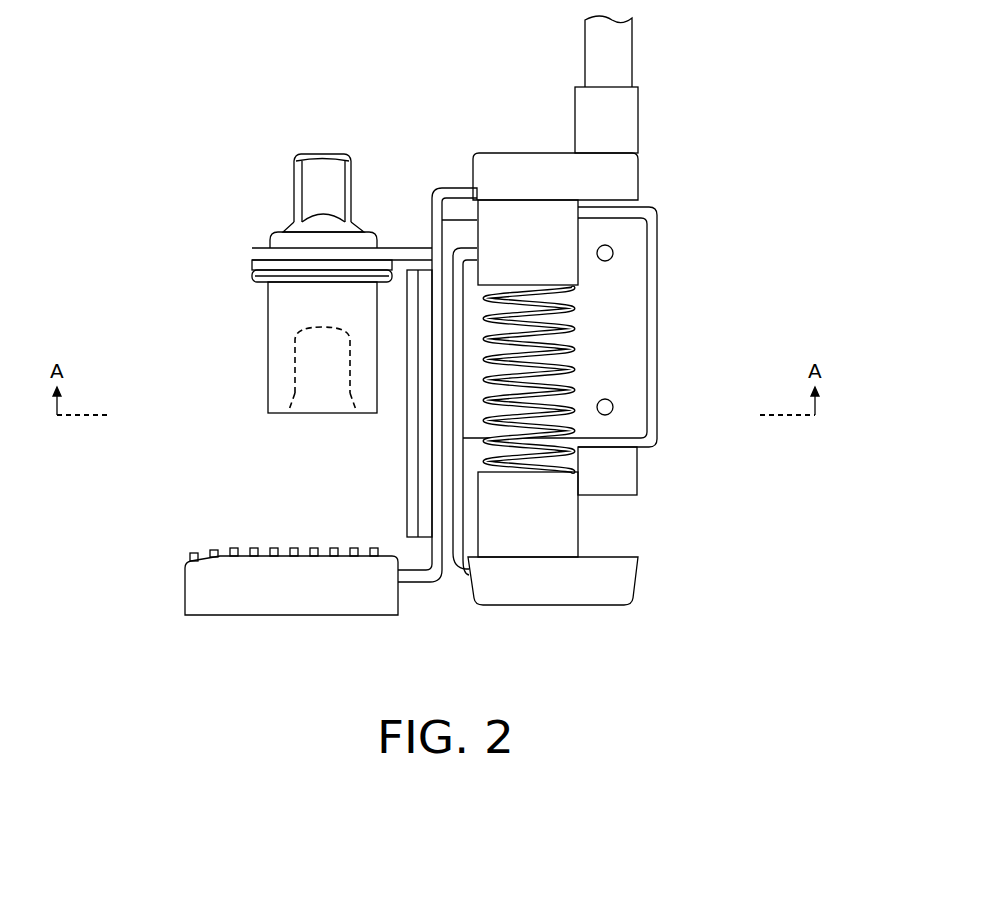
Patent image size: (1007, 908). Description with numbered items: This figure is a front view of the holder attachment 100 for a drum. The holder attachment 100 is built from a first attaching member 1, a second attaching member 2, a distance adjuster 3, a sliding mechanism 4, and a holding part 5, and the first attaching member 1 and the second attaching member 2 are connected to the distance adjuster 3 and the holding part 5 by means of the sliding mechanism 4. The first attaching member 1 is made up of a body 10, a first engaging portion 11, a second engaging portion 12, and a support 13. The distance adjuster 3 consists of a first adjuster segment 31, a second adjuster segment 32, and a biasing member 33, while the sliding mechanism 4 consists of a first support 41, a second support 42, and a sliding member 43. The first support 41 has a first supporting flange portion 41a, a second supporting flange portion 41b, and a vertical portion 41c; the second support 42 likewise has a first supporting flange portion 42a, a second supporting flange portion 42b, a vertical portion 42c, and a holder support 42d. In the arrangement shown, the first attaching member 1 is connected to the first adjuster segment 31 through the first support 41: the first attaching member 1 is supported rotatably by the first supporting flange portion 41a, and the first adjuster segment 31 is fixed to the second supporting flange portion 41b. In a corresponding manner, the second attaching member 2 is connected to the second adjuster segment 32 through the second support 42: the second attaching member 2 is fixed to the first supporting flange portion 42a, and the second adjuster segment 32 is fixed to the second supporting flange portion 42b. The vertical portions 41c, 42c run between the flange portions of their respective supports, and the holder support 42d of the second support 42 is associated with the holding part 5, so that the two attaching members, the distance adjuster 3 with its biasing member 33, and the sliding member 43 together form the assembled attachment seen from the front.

The holder attachment 100 is at (185, 101).
The first attaching member 1 is at (147, 155).
The body 10 is at (268, 342).
The first engaging portion 11 is at (308, 390).
The second engaging portion 12 is at (297, 188).
The support 13 is at (272, 238).
The second attaching member 2 is at (182, 591).
The distance adjuster 3 is at (613, 379).
The first adjuster segment 31 is at (625, 580).
The second adjuster segment 32 is at (625, 182).
The biasing member 33 is at (568, 358).
The sliding mechanism 4 is at (398, 478).
The first support 41 is at (509, 380).
The first supporting flange portion 41a is at (403, 253).
The second supporting flange portion 41b is at (458, 567).
The vertical portion 41c is at (458, 500).
The second support 42 is at (553, 357).
The first supporting flange portion 42a is at (425, 566).
The second supporting flange portion 42b is at (455, 188).
The vertical portion 42c is at (435, 237).
The holder support 42d is at (628, 303).
The sliding member 43 is at (410, 512).
The holding part 5 is at (628, 112).